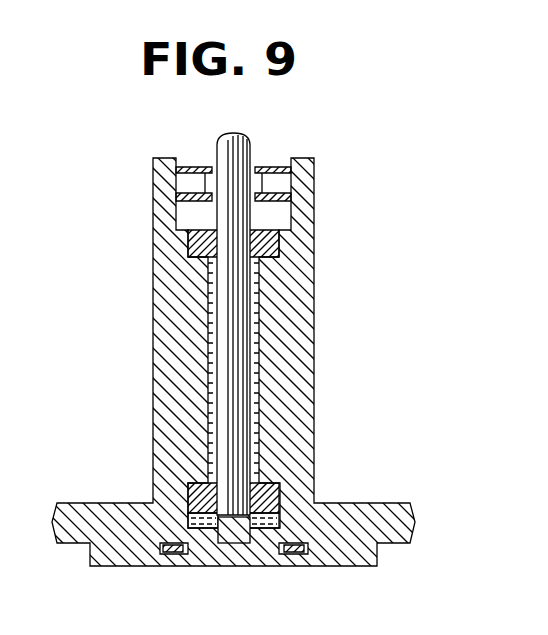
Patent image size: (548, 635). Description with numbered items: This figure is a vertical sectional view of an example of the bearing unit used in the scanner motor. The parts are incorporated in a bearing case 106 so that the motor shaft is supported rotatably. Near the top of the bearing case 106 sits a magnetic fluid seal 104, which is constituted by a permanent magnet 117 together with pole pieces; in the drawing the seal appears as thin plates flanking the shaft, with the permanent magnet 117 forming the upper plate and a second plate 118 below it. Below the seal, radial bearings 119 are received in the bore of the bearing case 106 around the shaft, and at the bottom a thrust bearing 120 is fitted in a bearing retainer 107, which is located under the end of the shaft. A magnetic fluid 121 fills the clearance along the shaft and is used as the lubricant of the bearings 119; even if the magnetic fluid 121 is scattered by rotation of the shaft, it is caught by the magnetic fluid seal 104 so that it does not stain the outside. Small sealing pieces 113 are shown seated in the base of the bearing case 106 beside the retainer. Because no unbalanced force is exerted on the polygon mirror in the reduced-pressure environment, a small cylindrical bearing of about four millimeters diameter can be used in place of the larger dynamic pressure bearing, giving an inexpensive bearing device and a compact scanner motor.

The magnetic fluid seal 104 is at (197, 167).
The bearing case 106 is at (108, 507).
The bearing retainer 107 is at (259, 548).
The O-ring seal 113 is at (373, 566).
The permanent magnet 117 is at (183, 184).
The lower flange 118 is at (178, 212).
The radial bearings 119 is at (280, 248).
The thrust bearing 120 is at (226, 545).
The magnetic fluid 121 is at (208, 378).